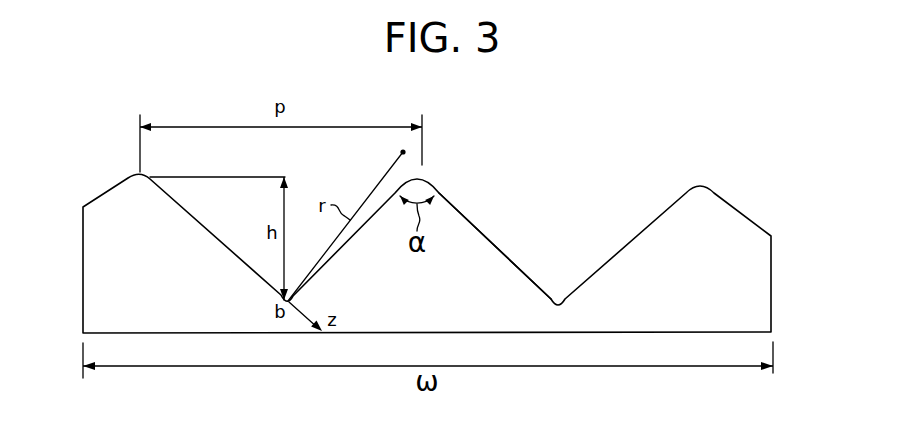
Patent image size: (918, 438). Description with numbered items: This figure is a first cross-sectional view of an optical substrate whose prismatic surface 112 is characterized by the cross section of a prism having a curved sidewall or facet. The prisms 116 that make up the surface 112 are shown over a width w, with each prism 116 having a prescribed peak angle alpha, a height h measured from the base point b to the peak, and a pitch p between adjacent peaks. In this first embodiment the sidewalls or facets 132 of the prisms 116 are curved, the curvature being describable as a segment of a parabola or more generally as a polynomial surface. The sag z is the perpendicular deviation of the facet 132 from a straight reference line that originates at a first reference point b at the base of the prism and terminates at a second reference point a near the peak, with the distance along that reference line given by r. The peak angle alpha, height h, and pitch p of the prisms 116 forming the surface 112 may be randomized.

The prismatic surface 112 is at (564, 171).
The prismatic structure 116 is at (375, 188).
The curved sidewall or facet 132 is at (493, 237).